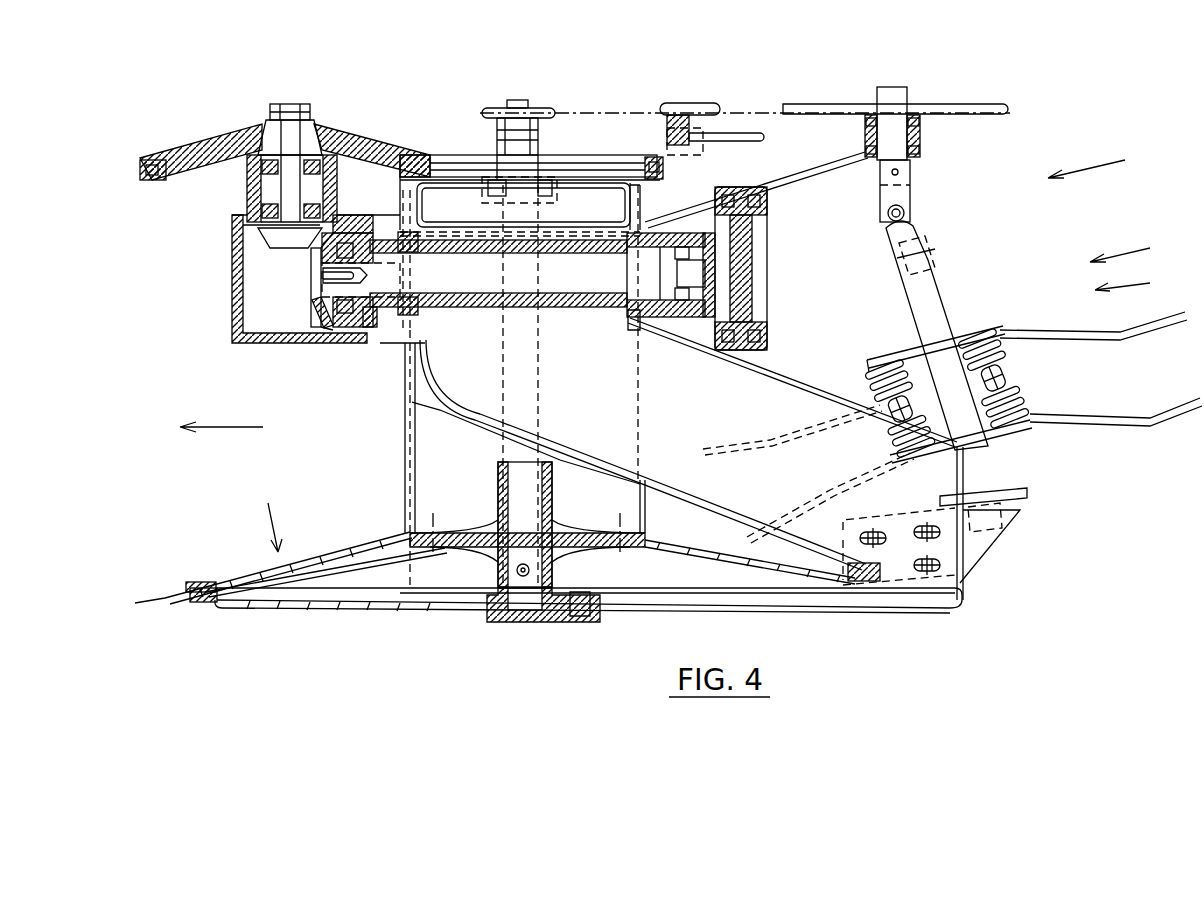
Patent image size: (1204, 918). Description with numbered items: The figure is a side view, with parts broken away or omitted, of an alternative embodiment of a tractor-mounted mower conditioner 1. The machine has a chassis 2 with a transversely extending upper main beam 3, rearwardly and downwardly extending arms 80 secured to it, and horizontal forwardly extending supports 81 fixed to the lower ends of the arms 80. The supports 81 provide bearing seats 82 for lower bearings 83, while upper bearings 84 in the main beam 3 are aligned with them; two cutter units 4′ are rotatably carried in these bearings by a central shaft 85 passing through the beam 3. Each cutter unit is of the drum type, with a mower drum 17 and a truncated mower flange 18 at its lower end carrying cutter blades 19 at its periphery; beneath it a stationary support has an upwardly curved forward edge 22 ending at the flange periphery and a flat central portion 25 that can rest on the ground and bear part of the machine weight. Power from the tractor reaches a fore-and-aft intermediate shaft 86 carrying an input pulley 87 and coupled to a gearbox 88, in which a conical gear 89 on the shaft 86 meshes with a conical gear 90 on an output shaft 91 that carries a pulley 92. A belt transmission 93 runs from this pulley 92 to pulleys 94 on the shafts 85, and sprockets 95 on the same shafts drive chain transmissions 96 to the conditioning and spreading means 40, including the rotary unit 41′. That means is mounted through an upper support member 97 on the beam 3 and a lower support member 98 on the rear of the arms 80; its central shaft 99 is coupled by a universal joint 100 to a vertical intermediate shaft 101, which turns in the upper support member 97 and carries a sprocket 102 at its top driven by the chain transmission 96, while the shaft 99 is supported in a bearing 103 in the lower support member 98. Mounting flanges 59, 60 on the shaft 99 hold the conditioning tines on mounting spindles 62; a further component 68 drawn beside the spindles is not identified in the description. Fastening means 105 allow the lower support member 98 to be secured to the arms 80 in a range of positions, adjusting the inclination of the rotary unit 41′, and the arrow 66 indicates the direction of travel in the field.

The mower unit 1 is at (1098, 158).
The chassis 2 is at (548, 178).
The main and upper beam 3 is at (445, 180).
The cutter units 4′ is at (264, 527).
The mower drum 17 is at (405, 478).
The mower flange 18 is at (350, 556).
The cutter blades 19 is at (180, 596).
The upwardly curved forward edge 22 is at (205, 602).
The flat central portions 25 is at (700, 597).
The conditioning and spreading means 40 is at (1139, 246).
The conditioning and spreading means 41′ is at (1144, 283).
The mounting flange 59 is at (962, 350).
The mounting flange 60 is at (1020, 433).
The mounting spindles 62 is at (1012, 375).
The direction 66 is at (228, 427).
The coil spring 68 is at (1020, 392).
The arms 80 is at (760, 368).
The supports 81 is at (805, 614).
The bearing seats 82 is at (487, 598).
The bearings 83 is at (550, 610).
The bearings 84 is at (488, 180).
The central shaft 85 is at (540, 333).
The intermediate shaft 86 is at (475, 307).
The input pulley 87 is at (767, 312).
The gearbox 88 is at (340, 343).
The conical gear 89 is at (313, 312).
The conical gear 90 is at (290, 248).
The output shaft 91 is at (262, 198).
The pulley 92 is at (150, 161).
The belt transmission 93 is at (152, 180).
The pulleys 94 is at (440, 155).
The sprockets 95 is at (527, 112).
The chain transmissions 96 is at (665, 125).
The upper support members 97 is at (822, 168).
The lower support members 98 is at (1018, 527).
The central shafts 99 is at (935, 288).
The universal joints 100 is at (920, 228).
The intermediate shafts 101 is at (922, 135).
The sprockets 102 is at (953, 105).
The bearings 103 is at (1030, 494).
The fastening means 105 is at (942, 568).